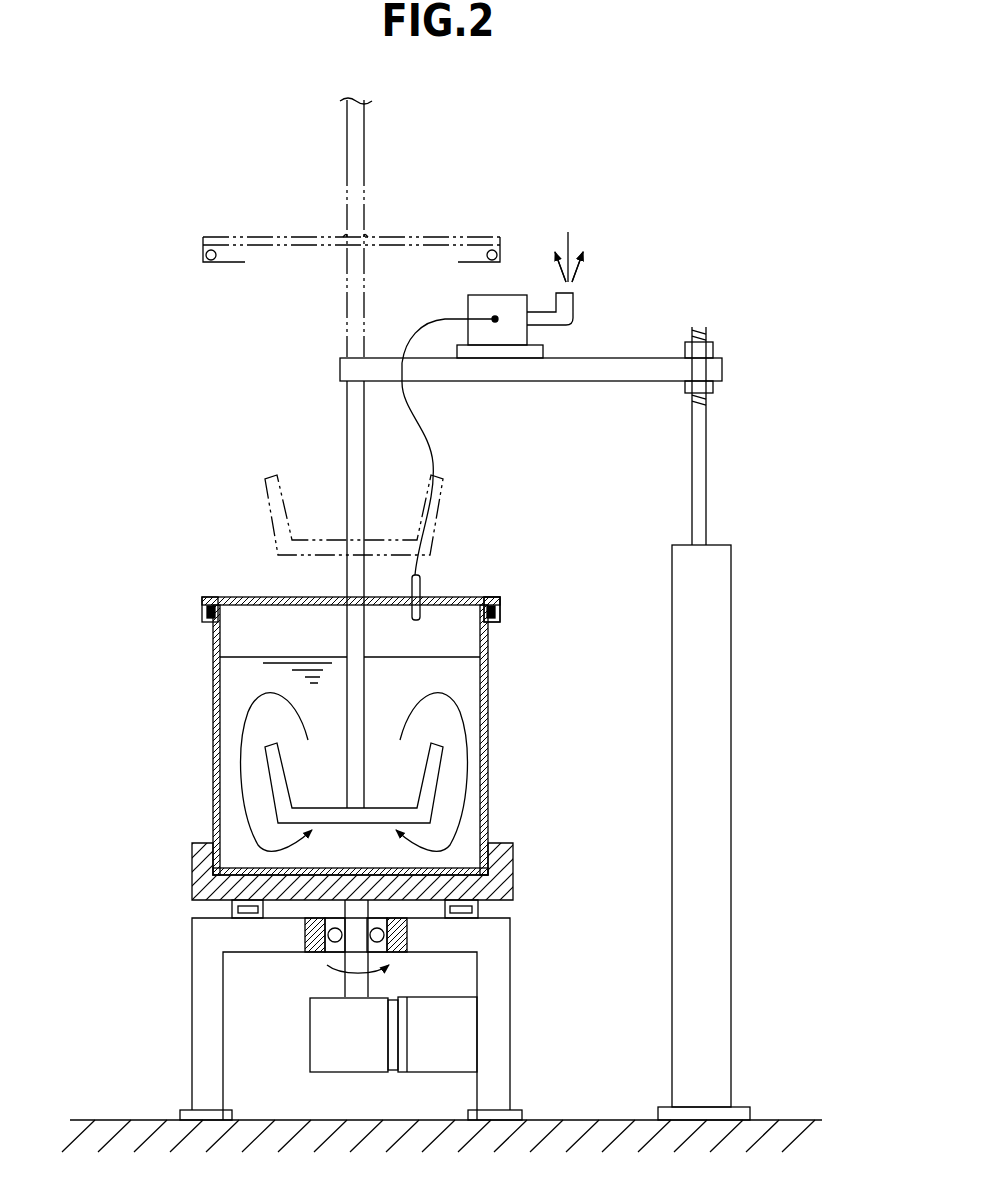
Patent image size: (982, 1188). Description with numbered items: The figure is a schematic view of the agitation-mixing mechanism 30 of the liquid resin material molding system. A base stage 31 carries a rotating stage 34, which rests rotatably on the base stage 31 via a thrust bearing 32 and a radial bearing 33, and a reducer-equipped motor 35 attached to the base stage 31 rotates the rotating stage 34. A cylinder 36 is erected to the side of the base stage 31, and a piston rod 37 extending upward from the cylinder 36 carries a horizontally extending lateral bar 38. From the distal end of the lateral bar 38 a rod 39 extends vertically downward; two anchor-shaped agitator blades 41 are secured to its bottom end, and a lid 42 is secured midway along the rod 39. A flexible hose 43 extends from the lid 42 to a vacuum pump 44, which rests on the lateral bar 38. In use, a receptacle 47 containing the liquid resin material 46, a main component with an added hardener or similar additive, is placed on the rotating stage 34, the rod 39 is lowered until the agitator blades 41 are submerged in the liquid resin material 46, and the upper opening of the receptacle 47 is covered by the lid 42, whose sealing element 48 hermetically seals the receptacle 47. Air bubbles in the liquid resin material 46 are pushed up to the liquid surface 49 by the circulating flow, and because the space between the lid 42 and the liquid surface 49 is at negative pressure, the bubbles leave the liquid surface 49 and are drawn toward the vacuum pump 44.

The agitation-mixing mechanism 30 is at (228, 352).
The base stage 31 is at (192, 1033).
The thrust bearing 32 is at (230, 903).
The radial bearing 33 is at (317, 953).
The rotating stage 34 is at (192, 862).
The reducer-equipped motor 35 is at (320, 1032).
The cylinder 36 is at (730, 853).
The piston rod 37 is at (706, 445).
The lateral bar 38 is at (535, 370).
The rod 39 is at (347, 433).
The agitator blades 41 is at (273, 772).
The lid 42 is at (257, 597).
The flexible hose 43 is at (432, 442).
The vacuum pump 44 is at (505, 295).
The liquid resin material 46 is at (237, 700).
The receptacle 47 is at (488, 715).
The sealing element 48 is at (500, 608).
The liquid surface 49 is at (257, 655).